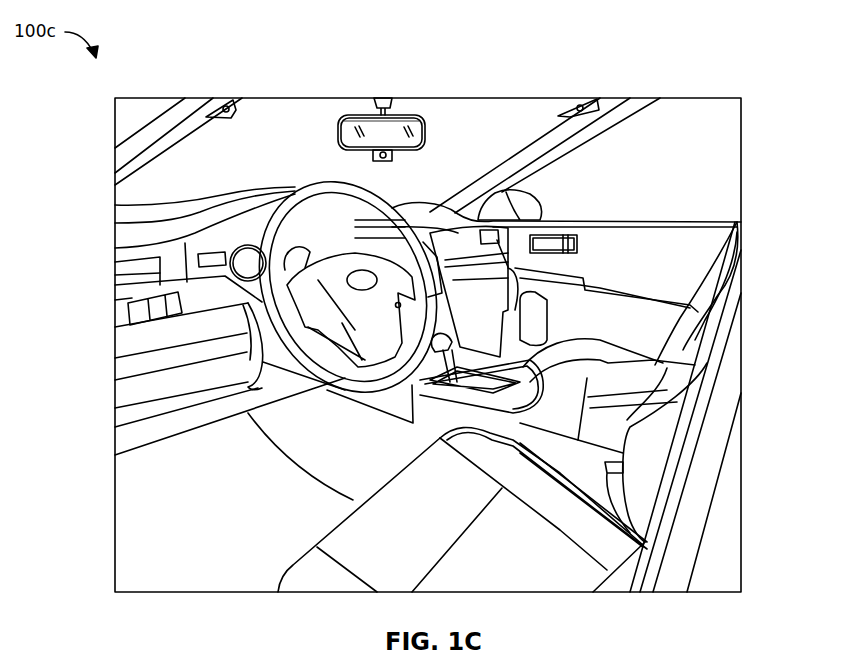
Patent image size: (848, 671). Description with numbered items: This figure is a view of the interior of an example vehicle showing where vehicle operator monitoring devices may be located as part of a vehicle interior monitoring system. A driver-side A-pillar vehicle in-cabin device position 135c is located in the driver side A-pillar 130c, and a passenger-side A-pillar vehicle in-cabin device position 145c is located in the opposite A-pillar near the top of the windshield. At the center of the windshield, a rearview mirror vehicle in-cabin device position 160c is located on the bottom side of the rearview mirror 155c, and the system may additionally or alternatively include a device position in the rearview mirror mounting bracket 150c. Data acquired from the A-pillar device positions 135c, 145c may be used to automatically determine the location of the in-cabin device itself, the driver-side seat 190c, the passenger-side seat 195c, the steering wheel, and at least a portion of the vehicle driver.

The driver side A-pillar 130c is at (155, 133).
The driver-side A-pillar vehicle in-cabin device position 135c is at (238, 117).
The passenger-side A-pillar vehicle in-cabin device position 145c is at (590, 102).
The rearview mirror mounting bracket 150c is at (381, 97).
The rearview mirror 155c is at (417, 118).
The rearview mirror vehicle in-cabin device position 160c is at (393, 161).
The driver-side seat 190c is at (527, 562).
The passenger-side seat 195c is at (708, 297).